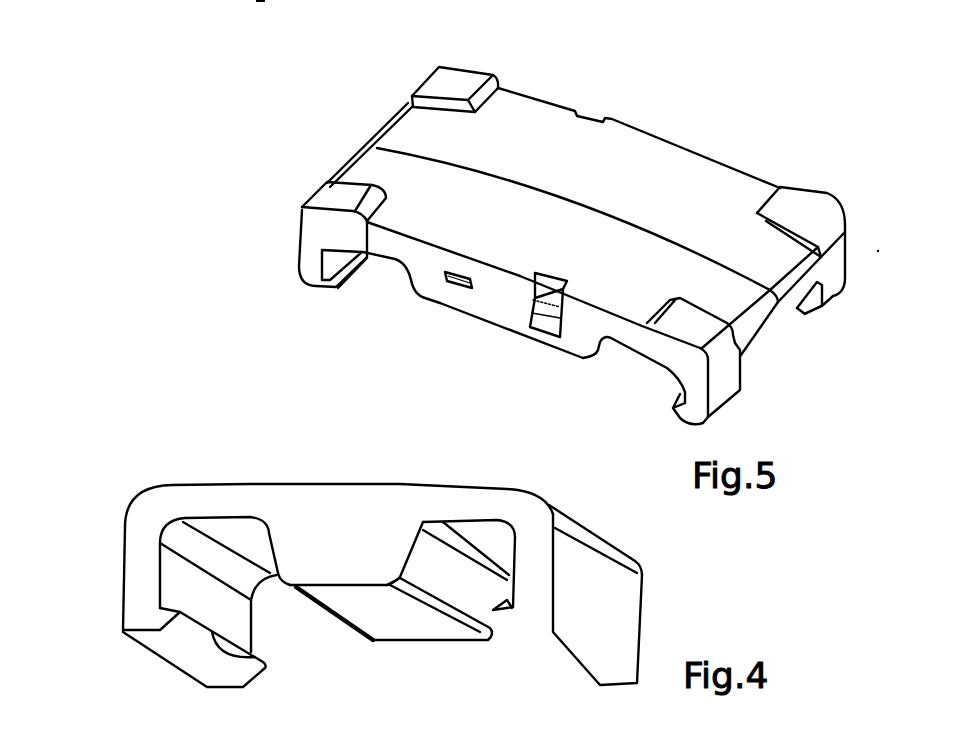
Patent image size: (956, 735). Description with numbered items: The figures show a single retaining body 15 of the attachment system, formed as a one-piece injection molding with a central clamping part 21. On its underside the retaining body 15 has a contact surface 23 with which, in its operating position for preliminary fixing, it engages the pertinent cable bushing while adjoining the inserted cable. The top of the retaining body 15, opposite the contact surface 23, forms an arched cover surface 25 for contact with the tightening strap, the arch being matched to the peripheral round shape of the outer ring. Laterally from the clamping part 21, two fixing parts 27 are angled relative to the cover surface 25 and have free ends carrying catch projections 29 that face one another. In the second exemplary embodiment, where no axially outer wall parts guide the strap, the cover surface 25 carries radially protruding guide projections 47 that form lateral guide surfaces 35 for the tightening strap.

In FIG. 5, the retaining body 15 is at (690, 100).
In FIG. 4, the retaining body 15 is at (203, 458).
In FIG. 5, the clamping part 21 is at (493, 302).
In FIG. 4, the clamping part 21 is at (340, 568).
In FIG. 5, the contact surface 23 is at (513, 332).
In FIG. 4, the contact surface 23 is at (377, 607).
In FIG. 5, the cover surface 25 is at (497, 193).
In FIG. 4, the cover surface 25 is at (368, 484).
In FIG. 5, the fixing parts 27 is at (313, 256).
In FIG. 4, the fixing parts 27 is at (145, 572).
In FIG. 5, the catch projections 29 is at (333, 282).
In FIG. 4, the catch projections 29 is at (265, 668).
In FIG. 5, the lateral guide surfaces 35 is at (437, 102).
In FIG. 5, the guide projections 47 is at (452, 85).